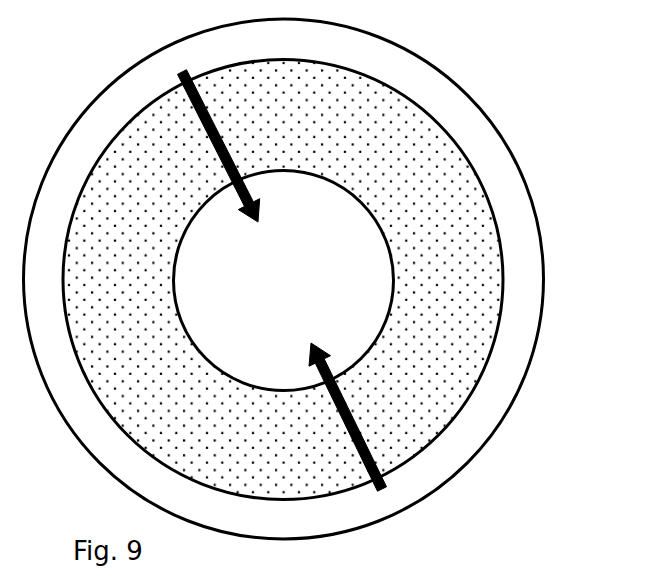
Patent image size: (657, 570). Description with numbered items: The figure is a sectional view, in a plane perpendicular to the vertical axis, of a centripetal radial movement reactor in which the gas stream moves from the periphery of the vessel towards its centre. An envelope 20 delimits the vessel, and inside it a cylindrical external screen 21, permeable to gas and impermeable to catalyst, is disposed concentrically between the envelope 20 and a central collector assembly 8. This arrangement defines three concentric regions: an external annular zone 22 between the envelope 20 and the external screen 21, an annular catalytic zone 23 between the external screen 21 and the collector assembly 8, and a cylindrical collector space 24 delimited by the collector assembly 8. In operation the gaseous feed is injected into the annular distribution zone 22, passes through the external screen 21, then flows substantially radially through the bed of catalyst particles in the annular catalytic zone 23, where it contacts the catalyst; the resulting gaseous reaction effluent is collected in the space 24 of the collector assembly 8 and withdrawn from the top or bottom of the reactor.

The collector assembly 8 is at (322, 147).
The envelope 20 is at (455, 86).
The external screen 21 is at (474, 395).
The external annular zone 22 is at (315, 53).
The annular catalytic zone 23 is at (409, 238).
The cylindrical collector space 24 is at (266, 297).